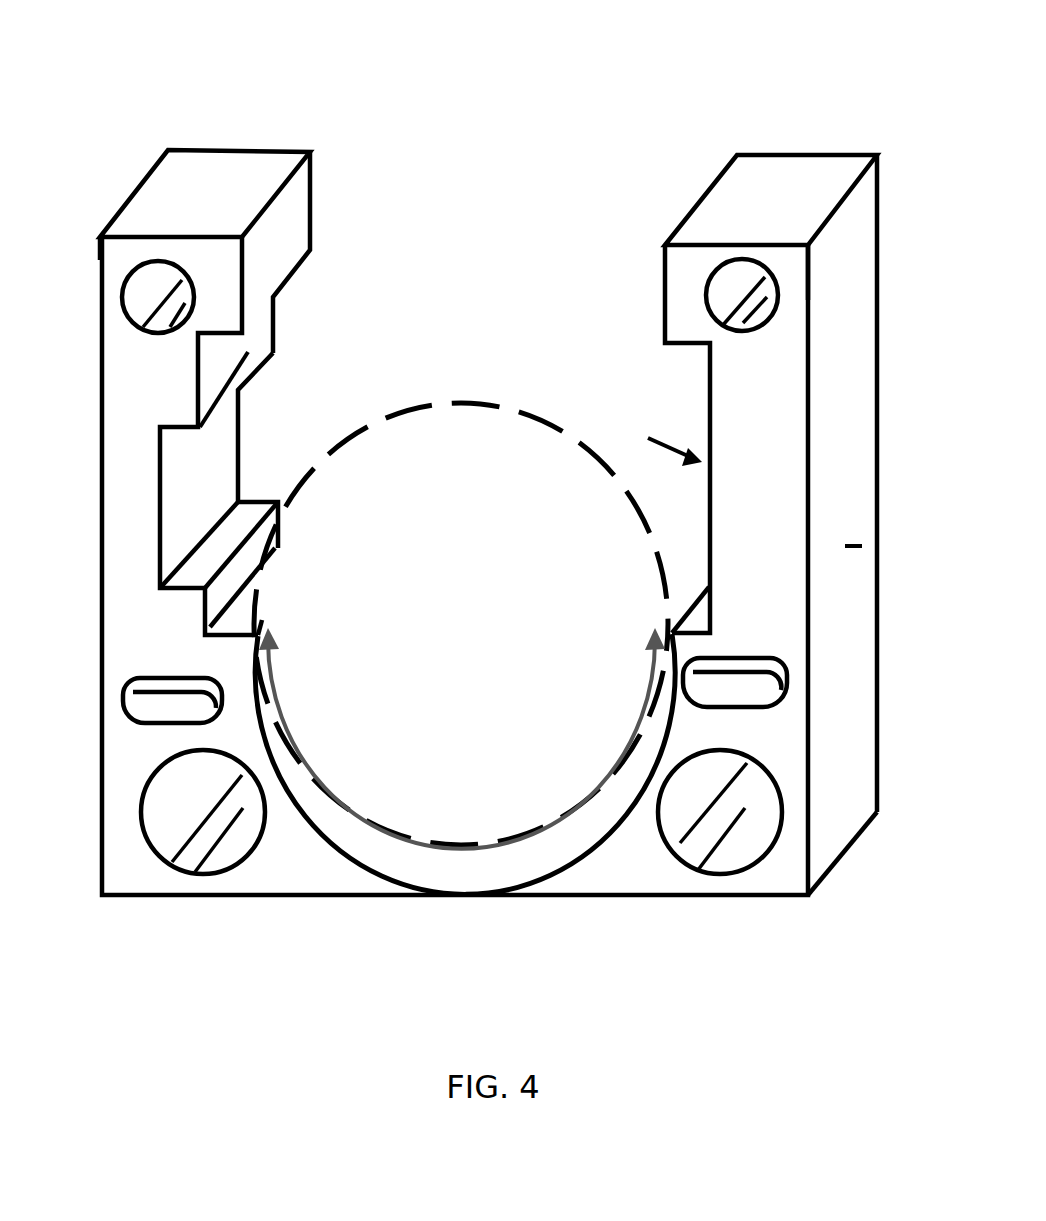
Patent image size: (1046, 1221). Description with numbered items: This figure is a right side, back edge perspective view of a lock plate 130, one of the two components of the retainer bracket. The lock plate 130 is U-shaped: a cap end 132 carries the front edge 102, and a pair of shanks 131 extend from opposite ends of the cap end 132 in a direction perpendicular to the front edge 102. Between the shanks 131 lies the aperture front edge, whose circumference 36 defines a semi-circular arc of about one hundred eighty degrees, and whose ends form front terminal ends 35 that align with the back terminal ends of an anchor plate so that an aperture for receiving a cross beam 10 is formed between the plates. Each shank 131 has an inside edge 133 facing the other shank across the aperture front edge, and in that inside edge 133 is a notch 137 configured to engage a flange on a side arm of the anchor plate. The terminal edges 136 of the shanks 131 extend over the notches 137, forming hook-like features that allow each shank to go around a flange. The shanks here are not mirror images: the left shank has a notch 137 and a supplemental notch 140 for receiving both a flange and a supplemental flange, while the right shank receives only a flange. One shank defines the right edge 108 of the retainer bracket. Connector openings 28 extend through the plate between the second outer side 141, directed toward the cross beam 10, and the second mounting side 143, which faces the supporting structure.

The lock plate 130 is at (238, 75).
The terminal edge 136 is at (183, 190).
The inside edge 133 is at (274, 361).
The shank 131 is at (122, 415).
The cross beam 10 is at (432, 402).
The notch 137 is at (643, 380).
The second mounting side 143 is at (852, 548).
The right edge 108 is at (862, 546).
The second outer side 141 is at (858, 650).
The supplemental notch 140 is at (280, 450).
The front terminal end 35 is at (267, 618).
The circumference 36 is at (462, 738).
The connector opening 28 is at (737, 858).
The cap end 132 is at (557, 872).
The front edge 102 is at (390, 900).